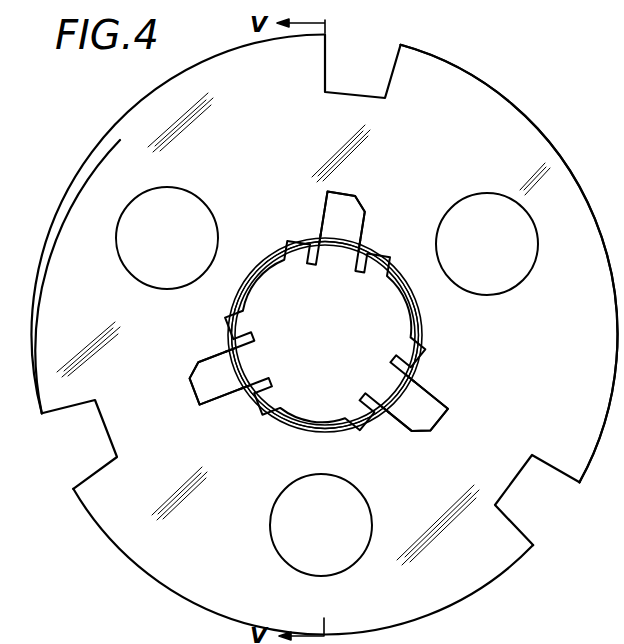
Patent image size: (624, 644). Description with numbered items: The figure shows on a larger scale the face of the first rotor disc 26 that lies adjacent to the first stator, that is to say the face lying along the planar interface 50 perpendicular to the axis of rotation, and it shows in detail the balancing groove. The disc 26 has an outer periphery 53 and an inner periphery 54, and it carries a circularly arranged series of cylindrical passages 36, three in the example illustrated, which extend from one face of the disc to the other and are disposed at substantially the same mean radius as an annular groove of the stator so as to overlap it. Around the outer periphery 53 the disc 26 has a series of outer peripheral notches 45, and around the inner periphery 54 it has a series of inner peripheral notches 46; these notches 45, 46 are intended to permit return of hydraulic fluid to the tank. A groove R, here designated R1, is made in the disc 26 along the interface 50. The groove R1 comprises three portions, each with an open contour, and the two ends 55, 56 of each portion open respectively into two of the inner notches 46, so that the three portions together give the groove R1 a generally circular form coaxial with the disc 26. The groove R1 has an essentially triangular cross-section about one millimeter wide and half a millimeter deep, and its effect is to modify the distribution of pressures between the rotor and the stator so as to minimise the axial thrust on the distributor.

The first rotor disc 26 is at (110, 131).
The planar interface 50 is at (90, 194).
The outer periphery 53 is at (465, 72).
The outer peripheral notches 45 is at (358, 90).
The cylindrical passages 36 is at (202, 203).
The inner peripheral notches 46 is at (349, 195).
The inner periphery 54 is at (362, 284).
The end of groove portion 55 is at (361, 240).
The end of groove portion 56 is at (321, 238).
The groove R is at (265, 252).
The groove R1 is at (232, 303).